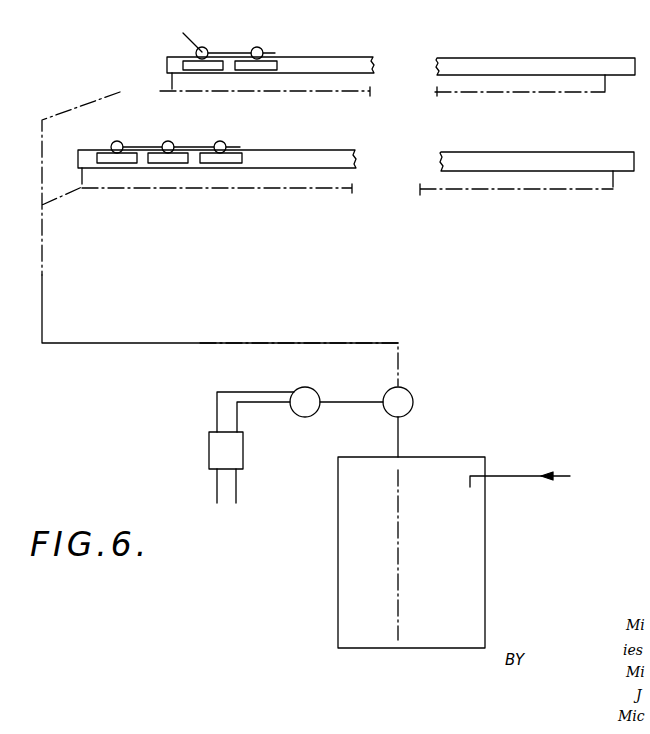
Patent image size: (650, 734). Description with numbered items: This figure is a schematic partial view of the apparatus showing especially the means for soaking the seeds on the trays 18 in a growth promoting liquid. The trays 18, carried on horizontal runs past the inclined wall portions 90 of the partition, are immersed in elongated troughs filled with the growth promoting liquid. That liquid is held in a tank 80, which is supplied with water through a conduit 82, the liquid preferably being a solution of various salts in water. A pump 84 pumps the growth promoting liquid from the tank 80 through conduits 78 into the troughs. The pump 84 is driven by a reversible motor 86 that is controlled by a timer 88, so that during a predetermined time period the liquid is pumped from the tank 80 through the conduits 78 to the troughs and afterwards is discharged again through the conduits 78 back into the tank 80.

The tray 18 is at (268, 65).
The inclined wall portion 90 is at (357, 66).
The conduit 78 is at (42, 281).
The pump 84 is at (412, 396).
The reversible motor 86 is at (303, 418).
The timer 88 is at (215, 451).
The tank 80 is at (485, 556).
The conduit 82 is at (517, 482).